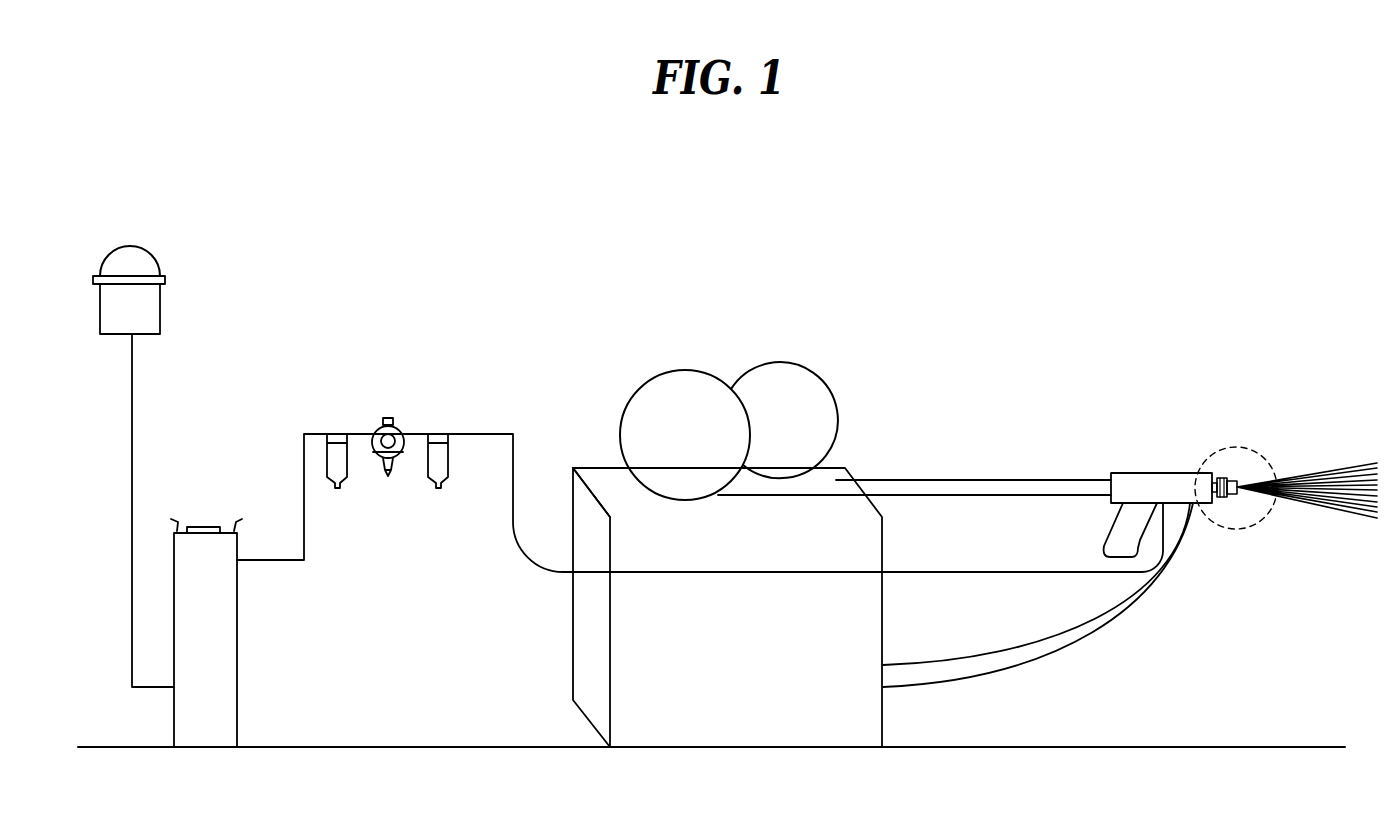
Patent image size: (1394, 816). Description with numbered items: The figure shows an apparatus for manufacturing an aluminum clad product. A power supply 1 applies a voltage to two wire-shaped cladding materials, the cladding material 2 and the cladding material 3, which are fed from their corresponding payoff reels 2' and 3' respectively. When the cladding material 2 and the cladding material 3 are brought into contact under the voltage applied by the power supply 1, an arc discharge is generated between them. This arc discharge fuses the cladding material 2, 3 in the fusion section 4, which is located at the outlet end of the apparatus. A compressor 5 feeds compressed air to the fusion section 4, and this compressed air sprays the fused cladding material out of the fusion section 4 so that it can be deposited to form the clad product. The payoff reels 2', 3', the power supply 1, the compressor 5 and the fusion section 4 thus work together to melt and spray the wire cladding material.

The power supply 1 is at (566, 676).
The cladding material 2 is at (973, 440).
The cladding material 3 is at (914, 454).
The payoff reel 2' is at (784, 387).
The payoff reel 3' is at (685, 405).
The fusion section 4 is at (1246, 436).
The compressor 5 is at (158, 248).